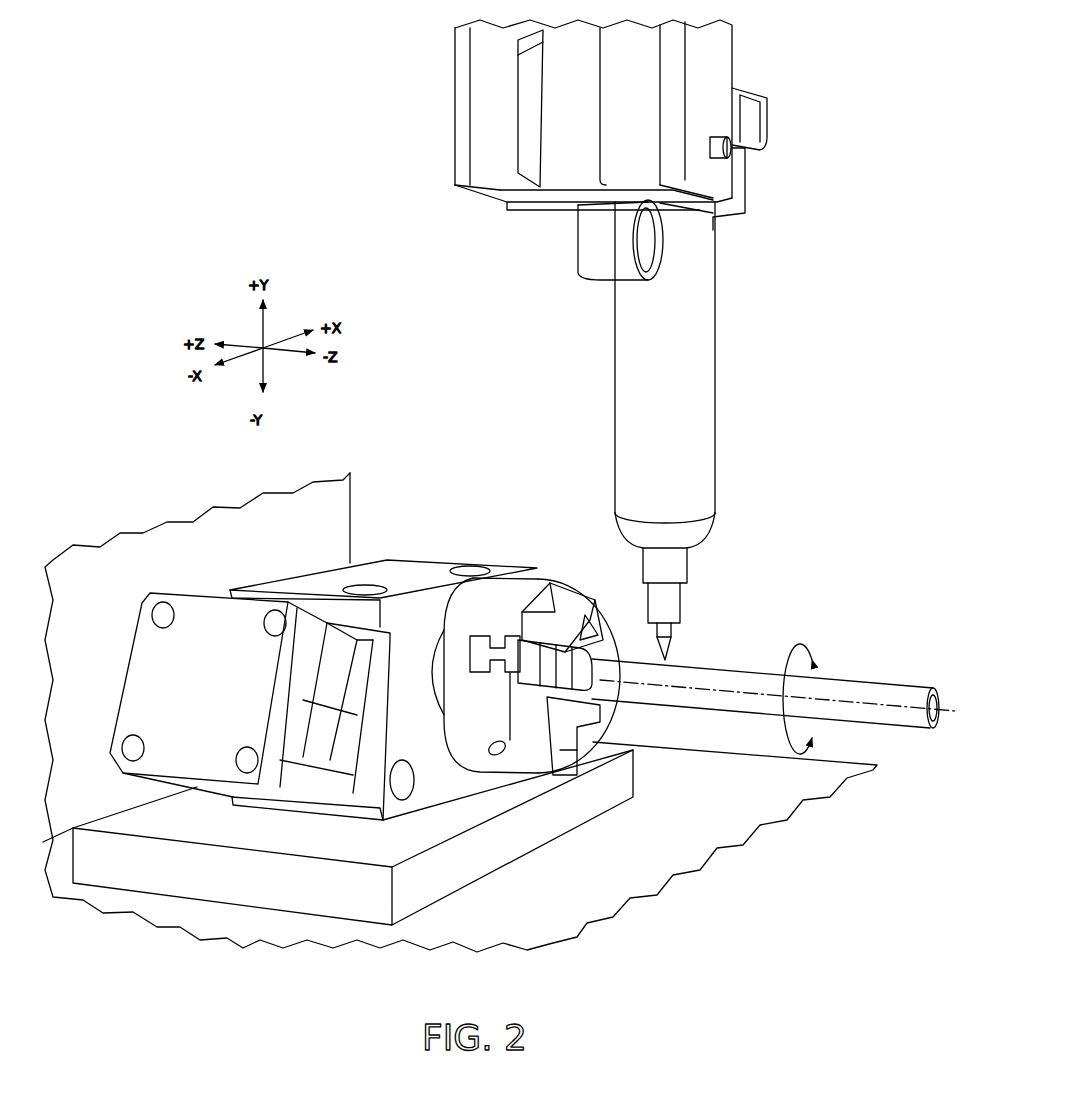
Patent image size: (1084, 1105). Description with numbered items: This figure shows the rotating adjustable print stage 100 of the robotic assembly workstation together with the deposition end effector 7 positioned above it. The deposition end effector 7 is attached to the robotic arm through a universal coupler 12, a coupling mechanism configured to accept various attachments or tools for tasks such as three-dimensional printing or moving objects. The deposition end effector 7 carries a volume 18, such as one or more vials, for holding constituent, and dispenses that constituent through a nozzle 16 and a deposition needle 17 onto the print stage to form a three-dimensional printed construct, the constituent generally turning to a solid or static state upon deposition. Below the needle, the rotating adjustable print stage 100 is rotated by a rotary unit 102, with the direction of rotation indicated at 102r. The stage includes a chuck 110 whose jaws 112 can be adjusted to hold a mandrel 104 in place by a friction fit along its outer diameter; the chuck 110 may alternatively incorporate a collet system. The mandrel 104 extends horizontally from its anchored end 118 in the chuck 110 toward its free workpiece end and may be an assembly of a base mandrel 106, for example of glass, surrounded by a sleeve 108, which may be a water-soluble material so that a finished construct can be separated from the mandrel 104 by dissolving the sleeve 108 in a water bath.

The deposition end effector 7 is at (668, 374).
The universal coupler 12 is at (762, 127).
The nozzle 16 is at (672, 604).
The deposition needle 17 is at (668, 646).
The volume 18 is at (694, 458).
The rotating adjustable print stage 100 is at (456, 458).
The rotary unit 102 is at (150, 668).
The rotation direction 102r is at (735, 692).
The mandrel 104 is at (858, 684).
The base mandrel 106 is at (935, 718).
The sleeve 108 is at (935, 690).
The chuck 110 is at (546, 620).
The jaws 112 is at (585, 614).
The anchored end 118 is at (540, 703).